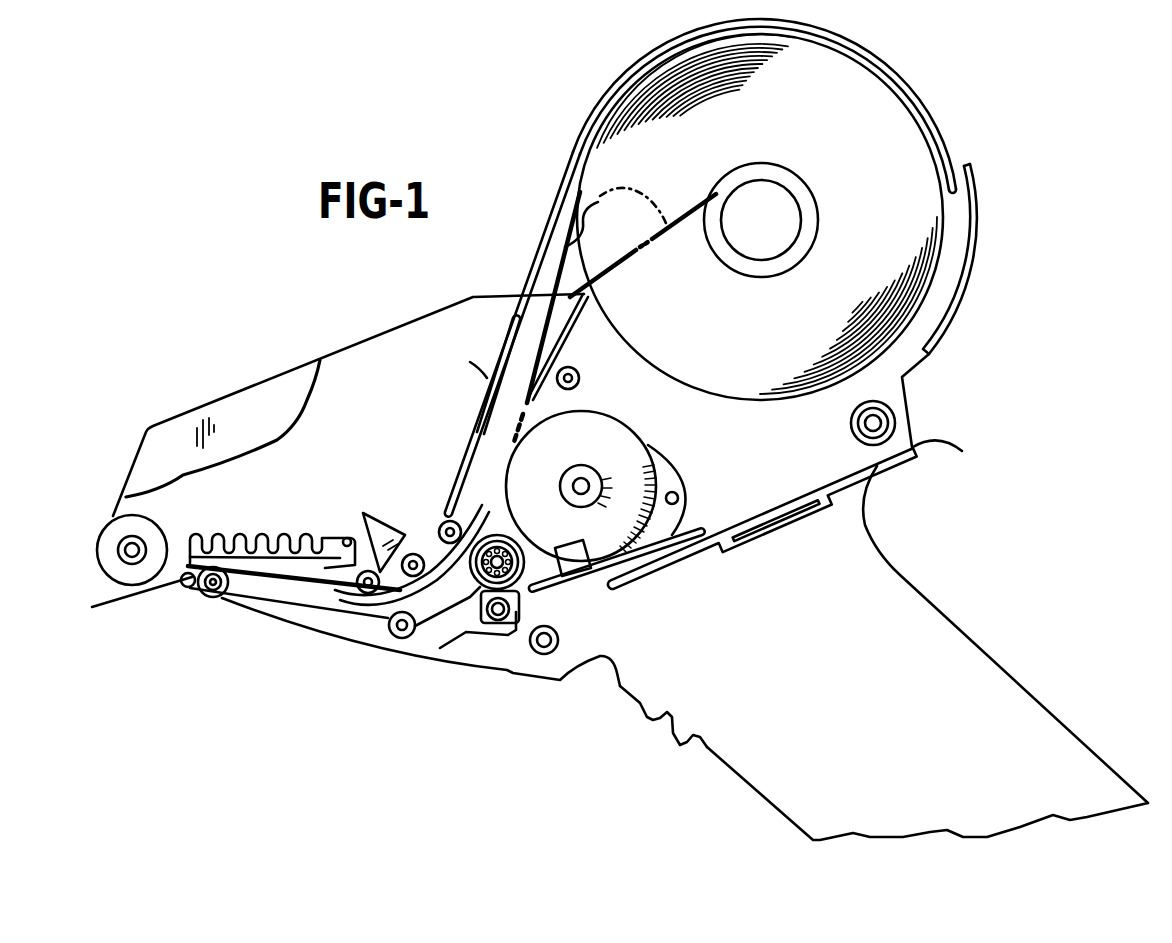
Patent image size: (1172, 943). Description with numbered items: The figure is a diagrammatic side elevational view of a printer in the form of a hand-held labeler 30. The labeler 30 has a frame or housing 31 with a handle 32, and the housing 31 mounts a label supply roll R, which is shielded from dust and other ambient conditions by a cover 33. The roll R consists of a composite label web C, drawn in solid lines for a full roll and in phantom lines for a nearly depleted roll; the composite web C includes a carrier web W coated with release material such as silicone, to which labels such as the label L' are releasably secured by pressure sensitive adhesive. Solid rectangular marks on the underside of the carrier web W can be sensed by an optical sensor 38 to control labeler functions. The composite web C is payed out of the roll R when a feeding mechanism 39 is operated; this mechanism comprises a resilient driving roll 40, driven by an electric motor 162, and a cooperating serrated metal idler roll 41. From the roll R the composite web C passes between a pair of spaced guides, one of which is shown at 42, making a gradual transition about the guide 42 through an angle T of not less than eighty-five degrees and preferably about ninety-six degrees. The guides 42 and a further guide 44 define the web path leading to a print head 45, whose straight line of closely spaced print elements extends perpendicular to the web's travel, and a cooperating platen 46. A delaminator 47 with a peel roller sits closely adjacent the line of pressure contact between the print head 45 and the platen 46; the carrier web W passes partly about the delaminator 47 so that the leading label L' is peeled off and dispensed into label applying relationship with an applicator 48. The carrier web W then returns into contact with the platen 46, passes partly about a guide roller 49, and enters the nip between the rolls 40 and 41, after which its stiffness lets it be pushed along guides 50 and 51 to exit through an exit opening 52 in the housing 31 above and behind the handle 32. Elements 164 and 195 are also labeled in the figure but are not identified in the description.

The hand-held labeler 30 is at (393, 305).
The frame or housing 31 is at (240, 410).
The handle 32 is at (968, 644).
The cover 33 is at (903, 76).
The optical sensor 38 is at (577, 546).
The feeding mechanism 39 is at (478, 584).
The resilient driving roll 40 is at (520, 556).
The serrated metal idler roll 41 is at (517, 603).
The guide 42 is at (493, 378).
The guide 44 is at (410, 532).
The print head 45 is at (214, 545).
The platen 46 is at (221, 605).
The delaminator 47 is at (186, 600).
The applicator 48 is at (102, 527).
The guide roller 49 is at (380, 643).
The guide 50 is at (703, 520).
The guide 51 is at (665, 568).
The exit opening 52 is at (928, 447).
The electric motor 162 is at (630, 385).
The pin 164 is at (673, 492).
The serrated edge 195 is at (640, 704).
The label supply roll R is at (937, 136).
The composite label web C is at (616, 206).
The angle T is at (472, 450).
The carrier web W is at (292, 620).
The label L' is at (139, 624).